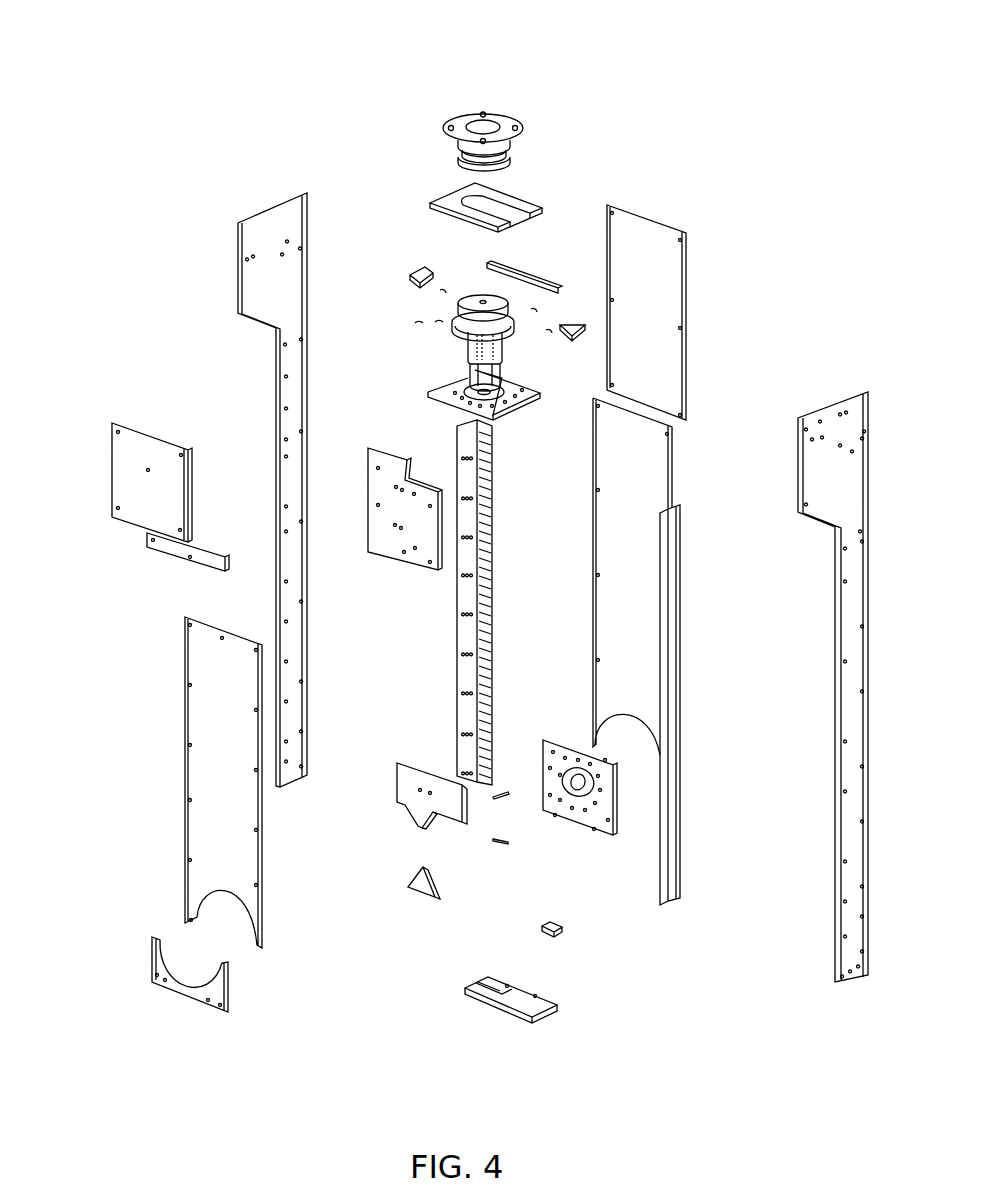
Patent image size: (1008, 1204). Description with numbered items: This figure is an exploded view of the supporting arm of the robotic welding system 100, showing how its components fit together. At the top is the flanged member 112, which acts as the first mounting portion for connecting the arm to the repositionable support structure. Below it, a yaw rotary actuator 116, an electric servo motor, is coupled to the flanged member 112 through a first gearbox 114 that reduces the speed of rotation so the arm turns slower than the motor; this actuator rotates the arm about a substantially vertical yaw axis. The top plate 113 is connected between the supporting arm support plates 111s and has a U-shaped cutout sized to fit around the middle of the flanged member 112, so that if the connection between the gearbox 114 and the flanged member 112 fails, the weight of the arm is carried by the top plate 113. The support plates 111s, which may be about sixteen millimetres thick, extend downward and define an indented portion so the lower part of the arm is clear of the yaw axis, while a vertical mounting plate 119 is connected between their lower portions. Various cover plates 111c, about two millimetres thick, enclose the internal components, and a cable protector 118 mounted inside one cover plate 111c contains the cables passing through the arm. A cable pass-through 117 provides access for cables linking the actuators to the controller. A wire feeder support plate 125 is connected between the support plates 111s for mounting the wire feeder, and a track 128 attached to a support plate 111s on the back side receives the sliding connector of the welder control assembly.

The robotic welding system 100 is at (274, 58).
The flanged member 112 is at (505, 118).
The top plate 113 is at (447, 190).
The first gearbox 114 is at (463, 298).
The yaw rotary actuator 116 is at (495, 345).
The cable pass-through 117 is at (505, 410).
The cable protector 118 is at (465, 672).
The vertical mounting plate 119 is at (580, 815).
The wire feeder support plate 125 is at (387, 467).
The track 128 is at (670, 780).
The supporting arm support plates 111s is at (253, 280).
The cover plates 111c is at (140, 445).